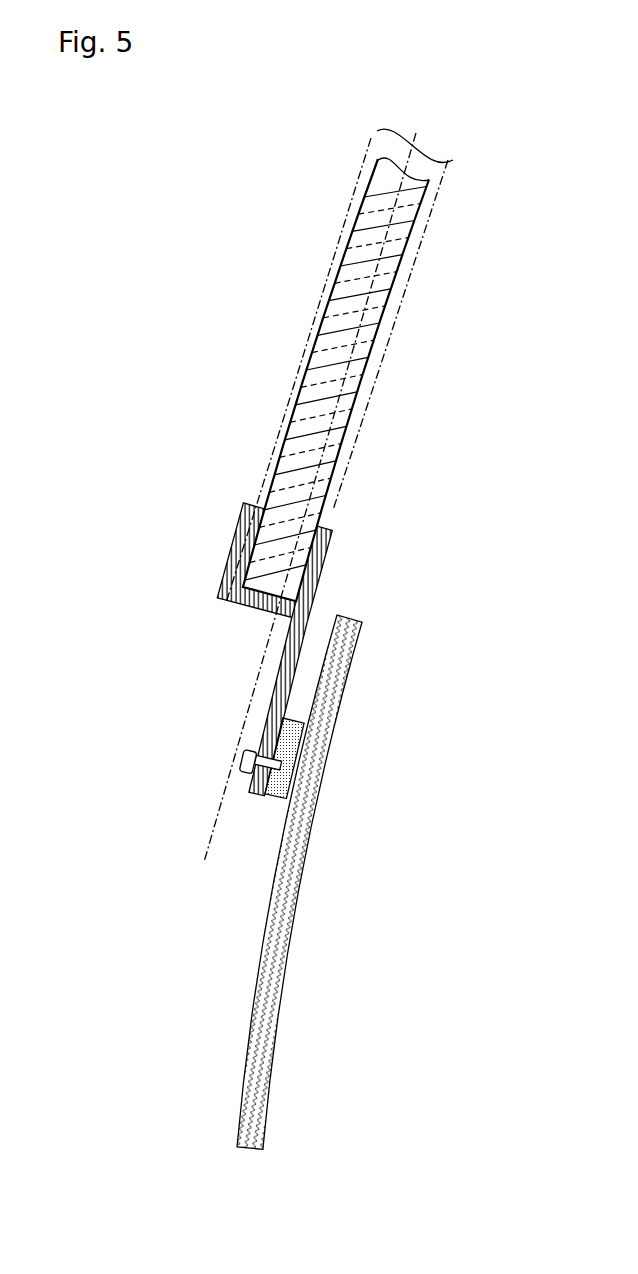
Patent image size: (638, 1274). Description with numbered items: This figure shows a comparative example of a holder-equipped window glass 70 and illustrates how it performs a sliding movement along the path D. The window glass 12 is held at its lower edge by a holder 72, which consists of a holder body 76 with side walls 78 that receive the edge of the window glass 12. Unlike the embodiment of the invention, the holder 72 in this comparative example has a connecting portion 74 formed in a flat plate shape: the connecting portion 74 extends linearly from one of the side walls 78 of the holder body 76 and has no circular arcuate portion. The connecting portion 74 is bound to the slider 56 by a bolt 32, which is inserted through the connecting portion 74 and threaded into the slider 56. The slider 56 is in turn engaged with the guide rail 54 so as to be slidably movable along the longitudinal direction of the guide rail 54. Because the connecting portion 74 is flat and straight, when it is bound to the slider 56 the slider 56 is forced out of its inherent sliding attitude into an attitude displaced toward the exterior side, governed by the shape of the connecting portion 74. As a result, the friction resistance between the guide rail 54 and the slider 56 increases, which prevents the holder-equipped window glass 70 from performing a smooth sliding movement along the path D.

The window glass 12 is at (333, 334).
The holder-equipped window glass 70 is at (229, 364).
The holder 72 is at (229, 536).
The connecting portion 74 is at (272, 706).
The holder body 76 is at (229, 576).
The side wall 78 is at (331, 556).
The bolt 32 is at (240, 759).
The slider 56 is at (272, 801).
The guide rail 54 is at (290, 924).
The path D is at (328, 482).